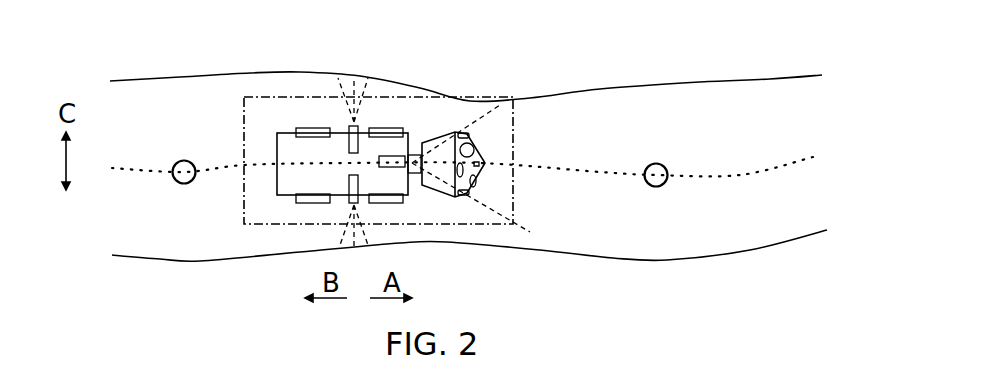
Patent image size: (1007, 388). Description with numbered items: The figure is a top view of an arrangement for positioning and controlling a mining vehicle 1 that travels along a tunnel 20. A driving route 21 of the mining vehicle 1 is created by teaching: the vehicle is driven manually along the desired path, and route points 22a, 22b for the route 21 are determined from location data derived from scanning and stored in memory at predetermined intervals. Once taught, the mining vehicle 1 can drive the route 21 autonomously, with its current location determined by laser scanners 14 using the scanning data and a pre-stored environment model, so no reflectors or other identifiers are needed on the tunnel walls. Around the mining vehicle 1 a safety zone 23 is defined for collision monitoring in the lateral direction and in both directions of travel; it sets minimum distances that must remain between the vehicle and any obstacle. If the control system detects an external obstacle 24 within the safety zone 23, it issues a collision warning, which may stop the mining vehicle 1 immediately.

The mining vehicle 1 is at (292, 148).
The laser scanner 14 is at (350, 142).
The tunnel 20 is at (180, 77).
The driving route 21 is at (122, 168).
The route point 22a is at (179, 184).
The route point 22b is at (646, 187).
The safety zone 23 is at (493, 218).
The external obstacle 24 is at (500, 100).